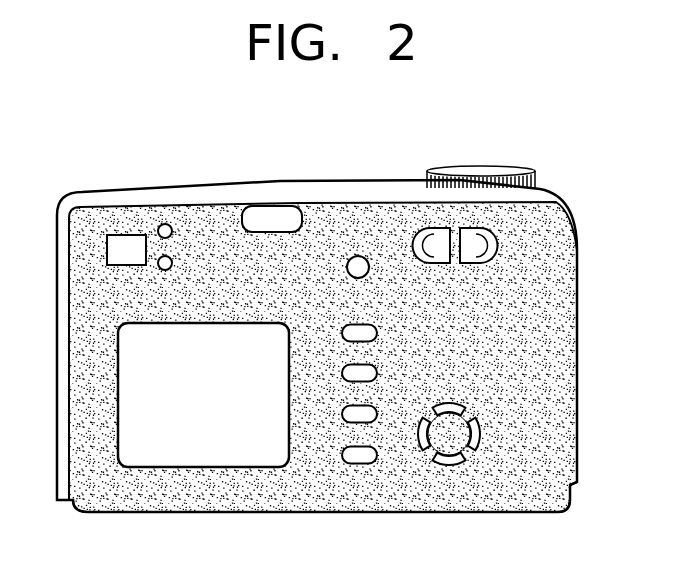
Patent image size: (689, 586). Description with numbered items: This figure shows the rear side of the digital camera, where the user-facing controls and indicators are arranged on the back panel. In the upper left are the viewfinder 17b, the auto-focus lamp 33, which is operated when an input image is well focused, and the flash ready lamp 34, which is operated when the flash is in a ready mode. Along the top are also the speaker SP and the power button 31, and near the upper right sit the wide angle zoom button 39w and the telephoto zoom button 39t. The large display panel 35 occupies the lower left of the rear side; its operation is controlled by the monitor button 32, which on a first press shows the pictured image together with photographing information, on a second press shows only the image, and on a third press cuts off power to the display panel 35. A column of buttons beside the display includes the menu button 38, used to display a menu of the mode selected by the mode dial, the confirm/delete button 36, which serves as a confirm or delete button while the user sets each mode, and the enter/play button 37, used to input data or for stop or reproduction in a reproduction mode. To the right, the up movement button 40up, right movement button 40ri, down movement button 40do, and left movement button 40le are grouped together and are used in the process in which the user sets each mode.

The viewfinder 17b is at (123, 243).
The auto-focus lamp 33 is at (166, 223).
The flash ready lamp 34 is at (159, 267).
The speaker SP is at (272, 215).
The power button 31 is at (360, 262).
The wide angle zoom button 39w is at (427, 243).
The telephoto zoom button 39t is at (475, 243).
The monitor button 32 is at (378, 333).
The menu button 38 is at (378, 373).
The display panel 35 is at (207, 450).
The confirm/delete button 36 is at (342, 423).
The enter/play button 37 is at (358, 464).
The up movement button 40up is at (466, 407).
The down movement button 40do is at (450, 464).
The left movement button 40le is at (423, 448).
The right movement button 40ri is at (481, 433).